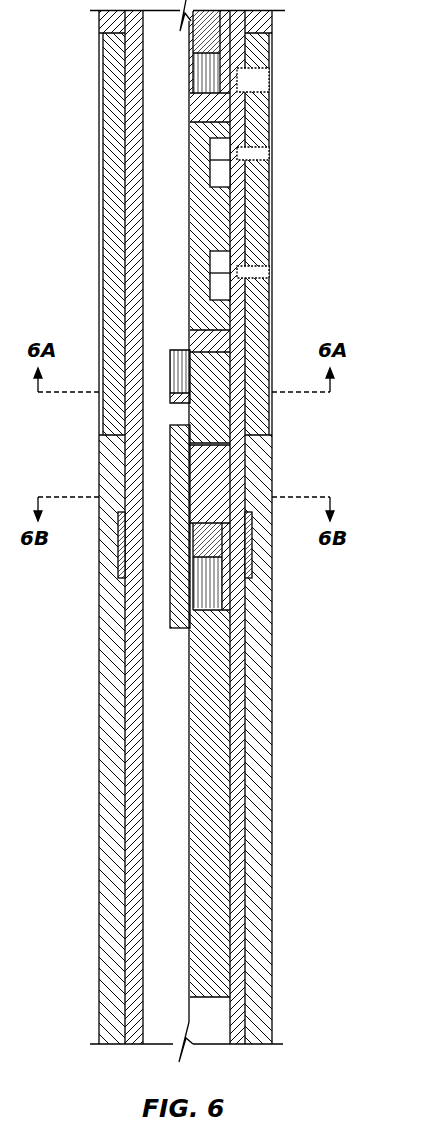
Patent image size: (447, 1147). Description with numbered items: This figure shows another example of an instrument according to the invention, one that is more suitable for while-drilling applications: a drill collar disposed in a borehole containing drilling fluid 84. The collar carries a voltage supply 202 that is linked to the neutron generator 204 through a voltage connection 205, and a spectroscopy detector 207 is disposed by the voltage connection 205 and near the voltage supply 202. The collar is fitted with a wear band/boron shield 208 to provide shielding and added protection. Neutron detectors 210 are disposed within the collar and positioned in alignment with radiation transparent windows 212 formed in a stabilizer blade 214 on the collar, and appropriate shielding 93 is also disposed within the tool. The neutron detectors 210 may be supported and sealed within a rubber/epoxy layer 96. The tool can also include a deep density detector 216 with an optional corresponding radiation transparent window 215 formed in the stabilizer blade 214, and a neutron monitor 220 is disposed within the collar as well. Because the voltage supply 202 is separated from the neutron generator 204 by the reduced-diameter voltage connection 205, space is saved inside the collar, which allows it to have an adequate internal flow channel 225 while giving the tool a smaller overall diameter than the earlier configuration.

The drilling fluid 84 is at (105, 740).
The shielding 93 is at (187, 107).
The rubber/epoxy layer 96 is at (200, 293).
The voltage supply 202 is at (200, 712).
The neutron generator 204 is at (200, 395).
The voltage connection 205 is at (180, 446).
The spectroscopy detector 207 is at (203, 545).
The wear band/boron shield 208 is at (118, 550).
The neutron detectors 210 is at (220, 275).
The radiation transparent windows 212 is at (250, 153).
The stabilizer blade 214 is at (107, 177).
The radiation transparent window 215 is at (258, 78).
The deep density detector 216 is at (205, 72).
The neutron monitor 220 is at (180, 356).
The internal flow channel 225 is at (155, 800).